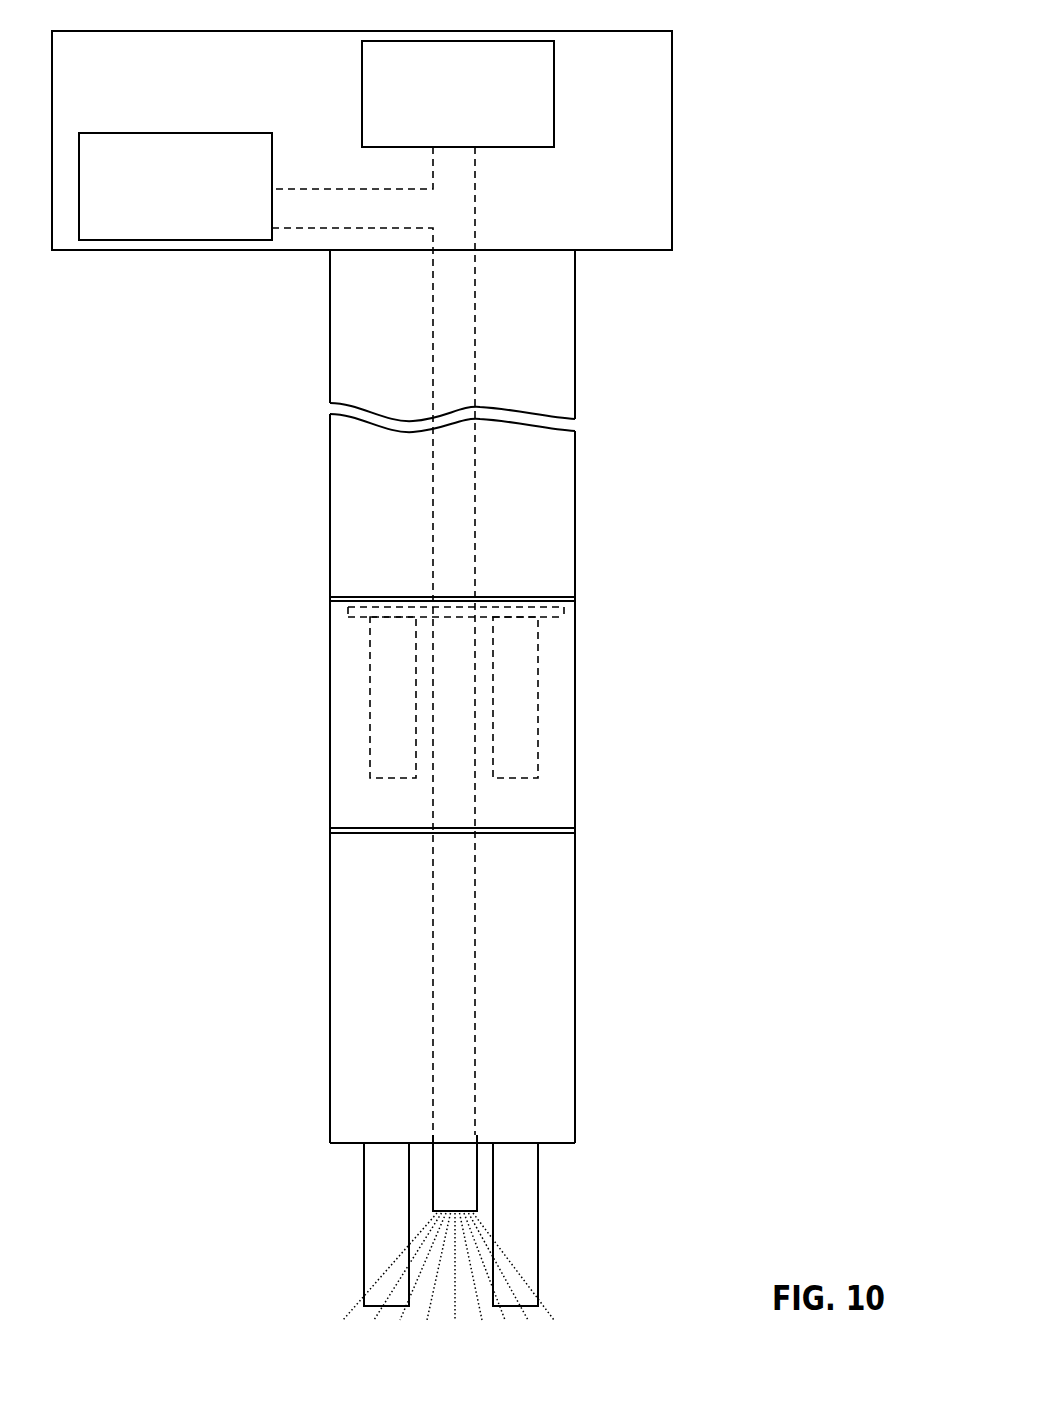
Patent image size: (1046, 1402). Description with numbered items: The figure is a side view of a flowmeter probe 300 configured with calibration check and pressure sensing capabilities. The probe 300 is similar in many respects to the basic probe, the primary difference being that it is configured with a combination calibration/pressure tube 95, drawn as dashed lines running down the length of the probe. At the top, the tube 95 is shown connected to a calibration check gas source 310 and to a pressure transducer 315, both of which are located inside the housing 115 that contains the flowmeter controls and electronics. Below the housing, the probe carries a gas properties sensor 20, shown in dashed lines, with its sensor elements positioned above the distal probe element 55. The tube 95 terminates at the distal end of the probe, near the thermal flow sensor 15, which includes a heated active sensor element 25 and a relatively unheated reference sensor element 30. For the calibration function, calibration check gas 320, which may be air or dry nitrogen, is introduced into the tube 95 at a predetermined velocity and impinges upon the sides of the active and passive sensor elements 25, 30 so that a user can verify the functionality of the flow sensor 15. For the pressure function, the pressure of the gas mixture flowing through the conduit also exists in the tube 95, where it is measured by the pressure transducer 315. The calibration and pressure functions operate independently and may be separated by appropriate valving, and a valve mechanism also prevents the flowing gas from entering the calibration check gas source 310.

The housing 115 is at (97, 65).
The calibration check gas source 310 is at (125, 163).
The pressure transducer 315 is at (405, 72).
The probe 300 is at (302, 537).
The gas properties sensor 20 is at (603, 727).
The distal probe element 55 is at (332, 1007).
The combination calibration/pressure tube 95 is at (500, 975).
The active sensor element 25 is at (368, 1191).
The reference sensor element 30 is at (532, 1175).
The thermal flow sensor 15 is at (587, 1251).
The calibration check gas 320 is at (497, 1338).